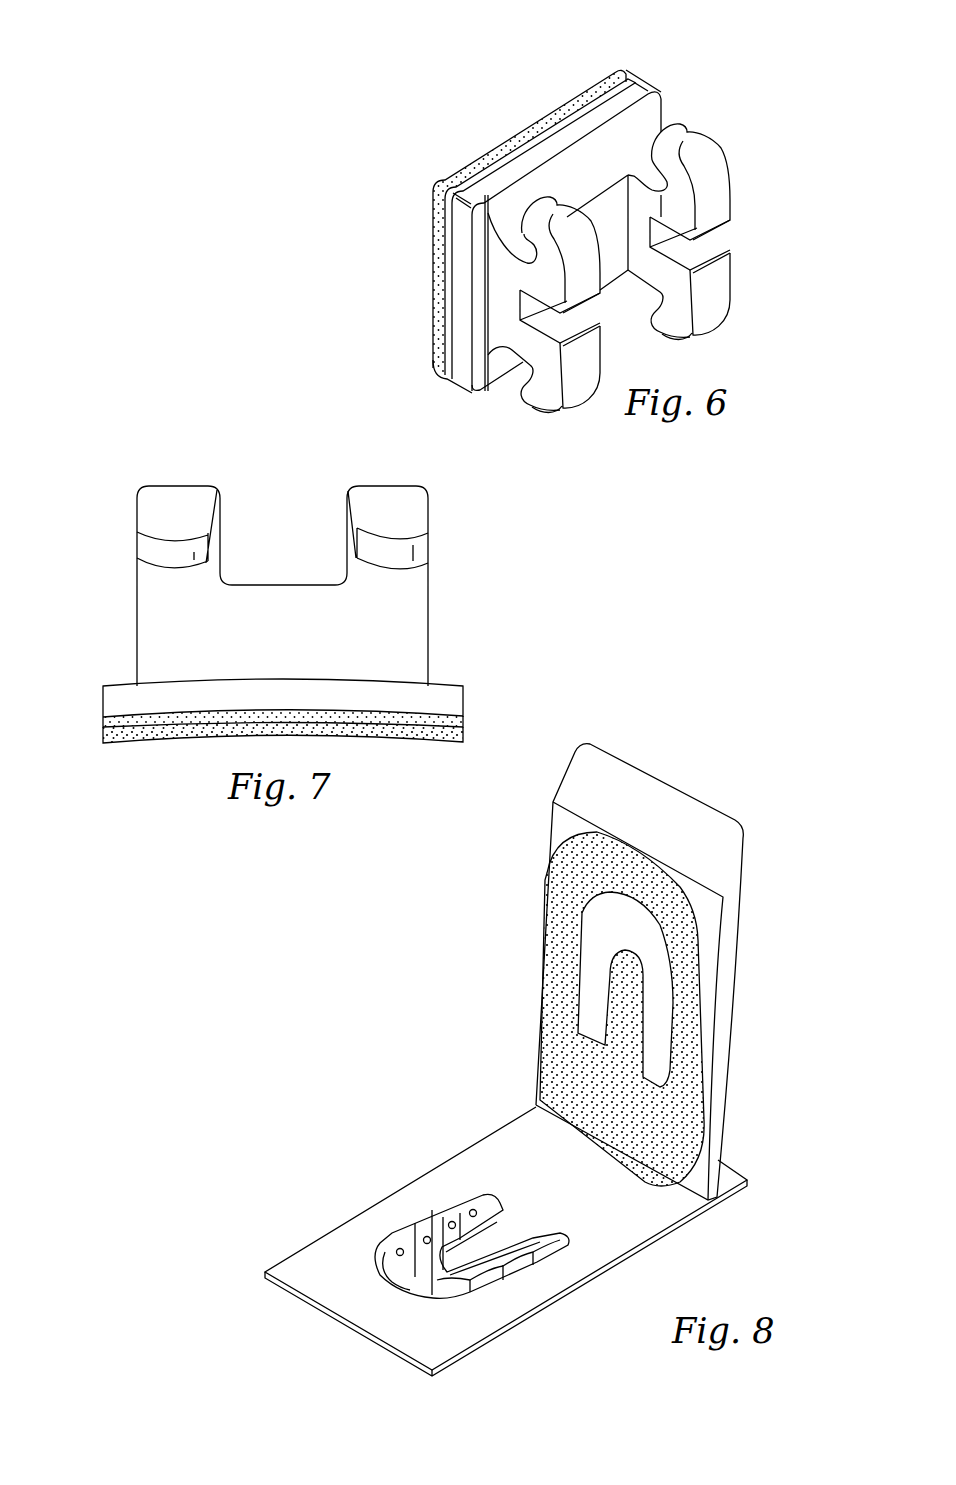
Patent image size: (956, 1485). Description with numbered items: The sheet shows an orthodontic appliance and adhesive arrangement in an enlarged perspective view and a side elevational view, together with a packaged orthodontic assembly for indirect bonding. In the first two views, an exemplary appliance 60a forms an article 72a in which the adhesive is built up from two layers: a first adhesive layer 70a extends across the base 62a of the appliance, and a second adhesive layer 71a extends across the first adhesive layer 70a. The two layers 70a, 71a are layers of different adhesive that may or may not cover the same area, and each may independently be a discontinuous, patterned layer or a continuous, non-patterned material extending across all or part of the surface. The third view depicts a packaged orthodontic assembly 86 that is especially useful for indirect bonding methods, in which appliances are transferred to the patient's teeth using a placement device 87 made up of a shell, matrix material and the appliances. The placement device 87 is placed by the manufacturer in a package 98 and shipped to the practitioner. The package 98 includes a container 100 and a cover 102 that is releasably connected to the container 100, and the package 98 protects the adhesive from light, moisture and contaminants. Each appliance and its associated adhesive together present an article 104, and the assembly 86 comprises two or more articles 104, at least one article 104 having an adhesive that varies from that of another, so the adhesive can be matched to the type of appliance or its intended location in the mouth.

In FIG. 6, the orthodontic appliance 60a is at (742, 152).
In FIG. 7, the orthodontic appliance 60a is at (442, 502).
In FIG. 6, the base 62a is at (658, 108).
In FIG. 7, the base 62a is at (112, 702).
In FIG. 6, the first adhesive layer 70a is at (575, 110).
In FIG. 7, the first adhesive layer 70a is at (110, 722).
In FIG. 6, the second adhesive layer 71a is at (593, 86).
In FIG. 7, the second adhesive layer 71a is at (162, 740).
In FIG. 6, the article 72a is at (402, 175).
In FIG. 7, the article 72a is at (258, 468).
In FIG. 8, the packaged orthodontic assembly 86 is at (432, 988).
In FIG. 8, the placement device 87 is at (431, 1202).
In FIG. 8, the package 98 is at (747, 1165).
In FIG. 8, the container 100 is at (646, 1272).
In FIG. 8, the cover 102 is at (562, 827).
In FIG. 8, the article 104 is at (408, 1218).